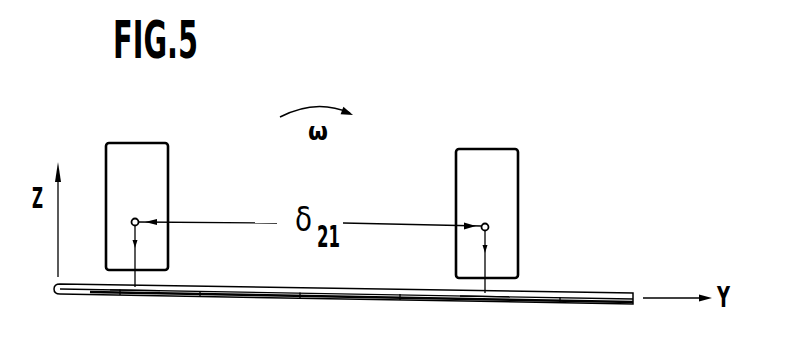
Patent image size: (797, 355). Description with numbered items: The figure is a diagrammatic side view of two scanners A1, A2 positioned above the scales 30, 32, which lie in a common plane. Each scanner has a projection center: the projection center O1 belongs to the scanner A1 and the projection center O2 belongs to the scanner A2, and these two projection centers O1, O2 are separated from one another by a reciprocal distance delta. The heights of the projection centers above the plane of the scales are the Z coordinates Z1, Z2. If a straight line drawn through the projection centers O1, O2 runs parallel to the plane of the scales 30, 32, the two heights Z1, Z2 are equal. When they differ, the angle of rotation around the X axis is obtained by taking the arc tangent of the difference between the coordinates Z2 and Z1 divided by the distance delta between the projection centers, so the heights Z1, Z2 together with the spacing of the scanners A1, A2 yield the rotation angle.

The scale 30 is at (487, 305).
The scale 32 is at (147, 302).
The scanner A1 is at (511, 213).
The scanner A2 is at (163, 206).
The projection center O1 is at (491, 211).
The projection center O2 is at (146, 204).
The Z coordinate of projection center Z1 is at (488, 282).
The Z coordinate of projection center Z2 is at (137, 278).